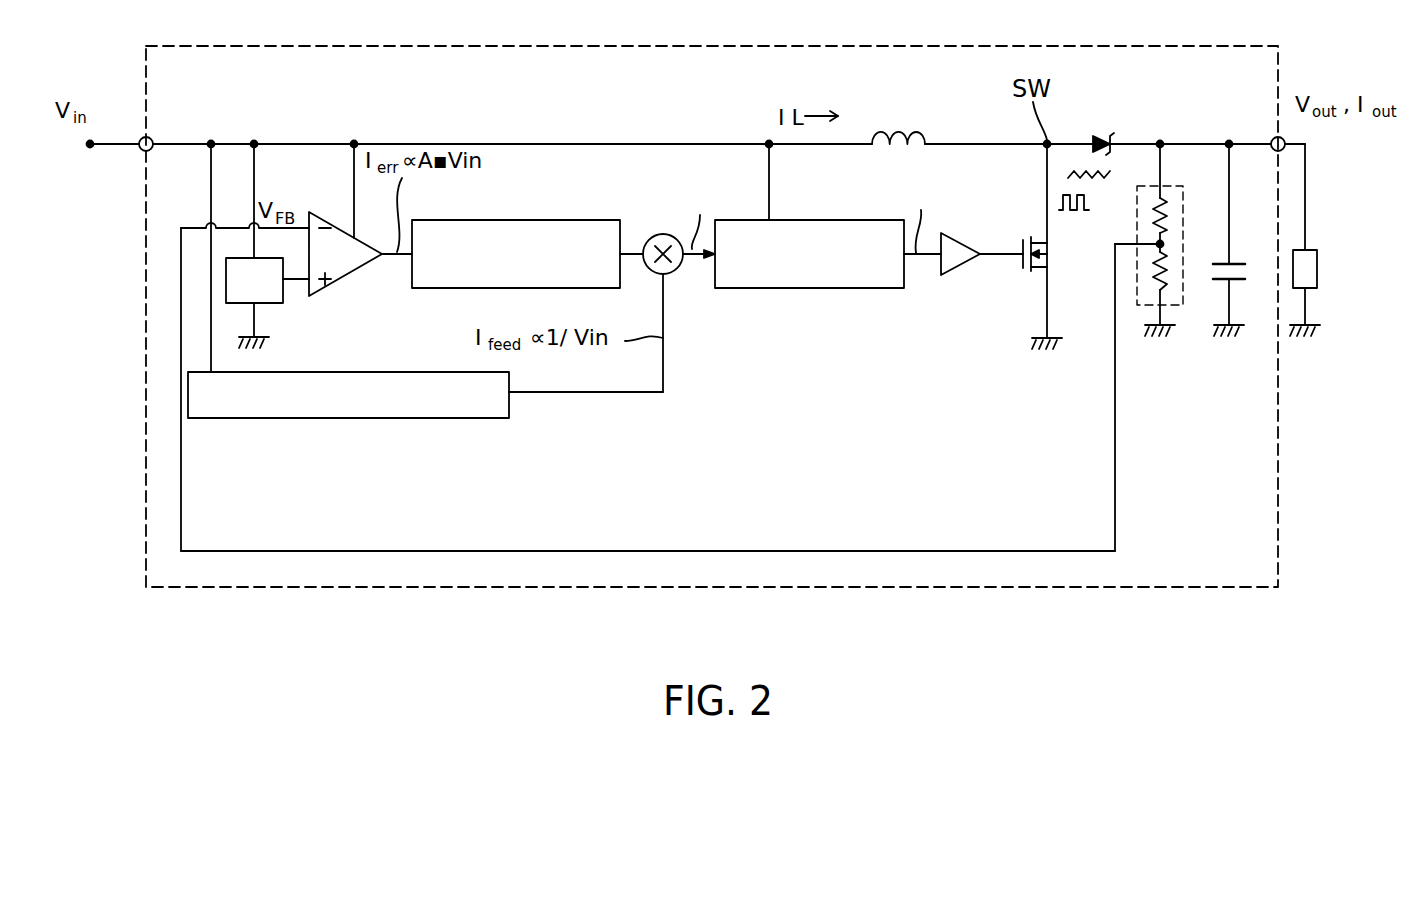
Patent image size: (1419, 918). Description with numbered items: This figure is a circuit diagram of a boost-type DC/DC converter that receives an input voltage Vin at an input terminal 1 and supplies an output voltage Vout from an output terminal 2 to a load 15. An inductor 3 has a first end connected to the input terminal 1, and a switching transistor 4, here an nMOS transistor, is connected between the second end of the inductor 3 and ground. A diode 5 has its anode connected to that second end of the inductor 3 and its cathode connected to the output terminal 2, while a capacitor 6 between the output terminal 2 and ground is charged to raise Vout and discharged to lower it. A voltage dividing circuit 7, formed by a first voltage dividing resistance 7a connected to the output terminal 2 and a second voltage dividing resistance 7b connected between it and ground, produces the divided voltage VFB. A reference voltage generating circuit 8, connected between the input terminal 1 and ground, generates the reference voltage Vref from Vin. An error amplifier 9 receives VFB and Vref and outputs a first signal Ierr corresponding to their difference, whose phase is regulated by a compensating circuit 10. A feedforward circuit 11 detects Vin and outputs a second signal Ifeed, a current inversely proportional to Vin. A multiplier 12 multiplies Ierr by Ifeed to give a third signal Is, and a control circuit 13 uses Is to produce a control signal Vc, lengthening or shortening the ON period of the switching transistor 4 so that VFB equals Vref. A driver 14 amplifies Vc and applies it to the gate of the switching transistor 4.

The input terminal 1 is at (146, 137).
The output terminal 2 is at (1273, 138).
The inductor 3 is at (890, 132).
The switching transistor 4 is at (1035, 240).
The diode 5 is at (1102, 137).
The capacitor 6 is at (1236, 262).
The voltage dividing circuit 7 is at (1156, 218).
The first voltage dividing resistance 7a is at (1155, 223).
The second voltage dividing resistance 7b is at (1163, 268).
The reference voltage generating circuit 8 is at (226, 278).
The error amplifier 9 is at (335, 222).
The compensating circuit 10 is at (566, 220).
The feedforward circuit 11 is at (297, 418).
The multiplier 12 is at (665, 234).
The control circuit 13 is at (842, 220).
The driver 14 is at (956, 240).
The load 15 is at (1308, 250).